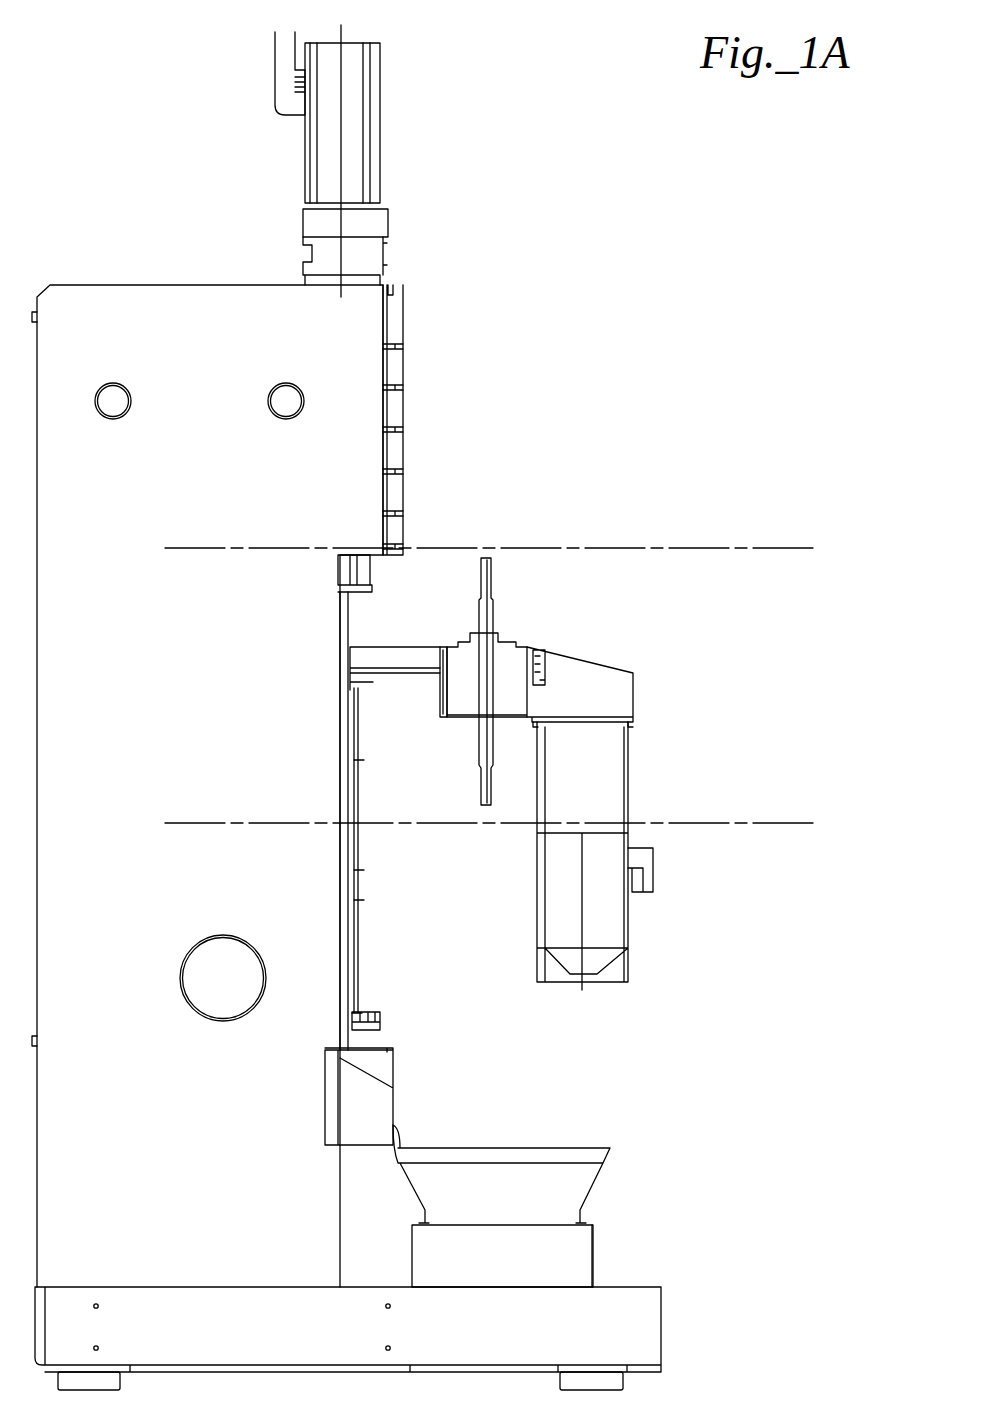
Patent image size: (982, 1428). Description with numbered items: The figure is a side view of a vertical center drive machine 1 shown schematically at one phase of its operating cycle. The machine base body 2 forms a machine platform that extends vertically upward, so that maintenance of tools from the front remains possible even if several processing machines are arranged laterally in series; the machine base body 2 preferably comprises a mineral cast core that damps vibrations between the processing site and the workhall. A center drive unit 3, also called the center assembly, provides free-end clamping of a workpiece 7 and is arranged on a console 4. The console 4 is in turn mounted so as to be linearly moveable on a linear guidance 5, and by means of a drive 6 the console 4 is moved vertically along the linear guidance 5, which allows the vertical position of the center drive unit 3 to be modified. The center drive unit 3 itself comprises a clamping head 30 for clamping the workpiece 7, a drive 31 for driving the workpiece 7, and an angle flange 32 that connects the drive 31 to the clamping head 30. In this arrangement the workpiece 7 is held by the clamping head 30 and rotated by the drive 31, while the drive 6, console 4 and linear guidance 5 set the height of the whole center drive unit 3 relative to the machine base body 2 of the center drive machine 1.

The center drive machine 1 is at (166, 260).
The machine base body 2 is at (47, 742).
The center drive unit 3 is at (555, 633).
The console 4 is at (360, 775).
The linear guidance 5 is at (358, 905).
The drive 6 is at (380, 125).
The workpiece 7 is at (481, 591).
The clamping head 30 is at (456, 647).
The drive 31 is at (628, 942).
The angle flange 32 is at (633, 690).